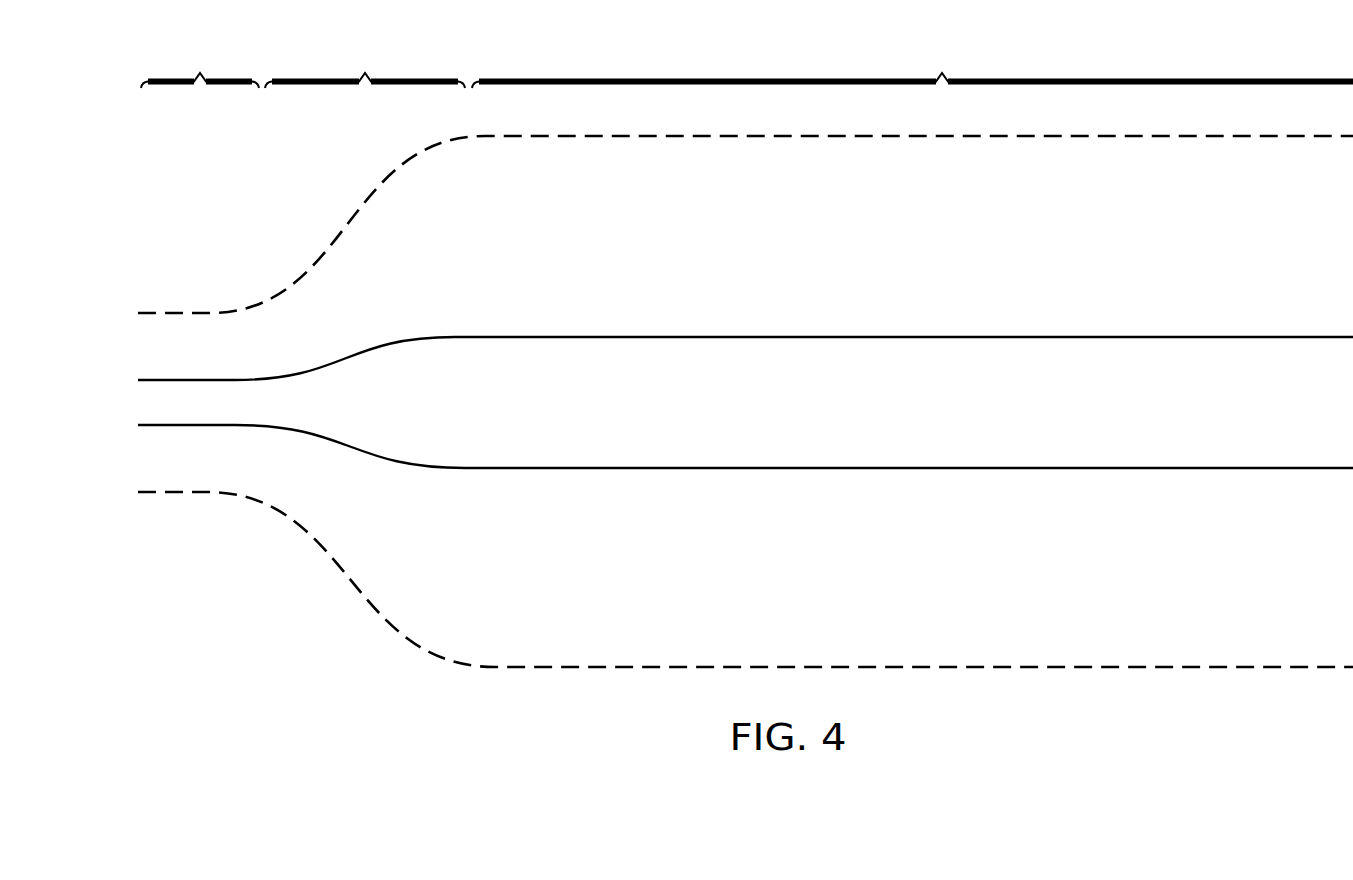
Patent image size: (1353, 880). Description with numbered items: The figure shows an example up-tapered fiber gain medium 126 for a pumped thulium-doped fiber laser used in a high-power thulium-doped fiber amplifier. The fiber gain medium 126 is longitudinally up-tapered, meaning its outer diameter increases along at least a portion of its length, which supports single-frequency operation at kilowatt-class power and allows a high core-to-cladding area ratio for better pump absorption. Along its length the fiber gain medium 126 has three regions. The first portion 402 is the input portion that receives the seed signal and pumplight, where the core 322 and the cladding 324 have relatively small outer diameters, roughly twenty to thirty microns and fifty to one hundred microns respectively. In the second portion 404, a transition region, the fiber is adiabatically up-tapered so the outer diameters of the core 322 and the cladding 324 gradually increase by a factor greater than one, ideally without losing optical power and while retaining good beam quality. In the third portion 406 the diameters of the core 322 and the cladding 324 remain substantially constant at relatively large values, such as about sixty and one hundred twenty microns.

The fiber gain medium 126 is at (745, 432).
The core 322 is at (589, 468).
The cladding 324 is at (1177, 668).
The first portion 402 is at (200, 65).
The second portion 404 is at (365, 65).
The third portion 406 is at (912, 65).